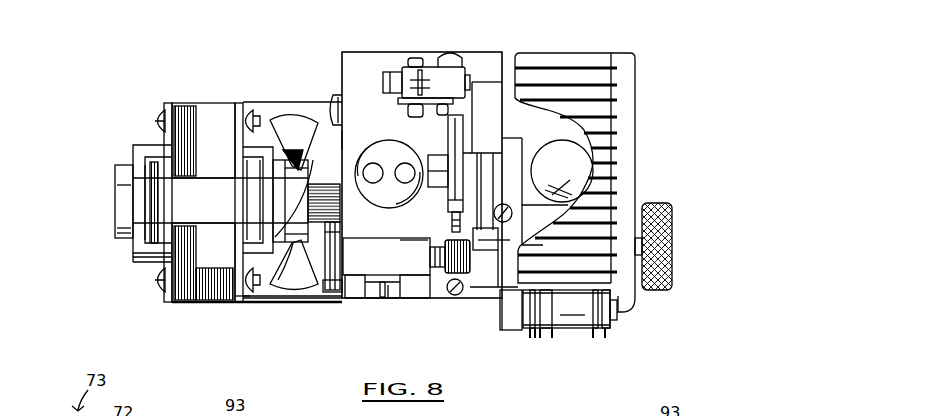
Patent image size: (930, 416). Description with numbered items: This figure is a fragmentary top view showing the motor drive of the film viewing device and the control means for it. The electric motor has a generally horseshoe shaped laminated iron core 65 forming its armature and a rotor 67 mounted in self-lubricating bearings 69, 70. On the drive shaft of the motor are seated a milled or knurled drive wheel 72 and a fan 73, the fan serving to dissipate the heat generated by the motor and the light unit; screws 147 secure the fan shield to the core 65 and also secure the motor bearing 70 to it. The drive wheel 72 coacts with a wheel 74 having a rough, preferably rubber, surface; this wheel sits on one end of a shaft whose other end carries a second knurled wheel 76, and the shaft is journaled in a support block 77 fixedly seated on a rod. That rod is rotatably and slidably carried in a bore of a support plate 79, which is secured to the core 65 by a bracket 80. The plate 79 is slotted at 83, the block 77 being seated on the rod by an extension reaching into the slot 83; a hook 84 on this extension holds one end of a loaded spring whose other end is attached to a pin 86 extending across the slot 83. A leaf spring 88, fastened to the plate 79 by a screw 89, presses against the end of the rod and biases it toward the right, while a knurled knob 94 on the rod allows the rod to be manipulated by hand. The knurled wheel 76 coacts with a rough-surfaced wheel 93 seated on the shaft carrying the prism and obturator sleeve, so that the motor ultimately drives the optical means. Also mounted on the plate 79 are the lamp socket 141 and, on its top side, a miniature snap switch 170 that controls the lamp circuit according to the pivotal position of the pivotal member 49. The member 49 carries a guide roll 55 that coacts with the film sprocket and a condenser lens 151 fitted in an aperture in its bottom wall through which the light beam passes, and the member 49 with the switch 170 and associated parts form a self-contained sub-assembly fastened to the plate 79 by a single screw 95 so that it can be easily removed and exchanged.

The pivotal member 49 is at (566, 38).
The guide roll 55 is at (567, 328).
The laminated iron core 65 is at (198, 112).
The rotor 67 is at (167, 235).
The bearing 69 is at (124, 212).
The bearing 70 is at (260, 147).
The drive wheel 72 is at (333, 202).
The fan 73 is at (311, 282).
The wheel 74 is at (333, 293).
The knurled wheel 76 is at (462, 278).
The support block 77 is at (418, 267).
The support plate 79 is at (365, 58).
The bracket 80 is at (262, 298).
The slot 83 is at (377, 298).
The hook 84 is at (382, 283).
The pin 86 is at (389, 298).
The leaf spring 88 is at (344, 140).
The screw 89 is at (336, 93).
The wheel 93 is at (461, 121).
The knurled knob 94 is at (657, 203).
The screw 95 is at (503, 203).
The socket 141 is at (409, 206).
The screws 147 is at (248, 303).
The condenser lens 151 is at (583, 162).
The snap switch 170 is at (435, 72).